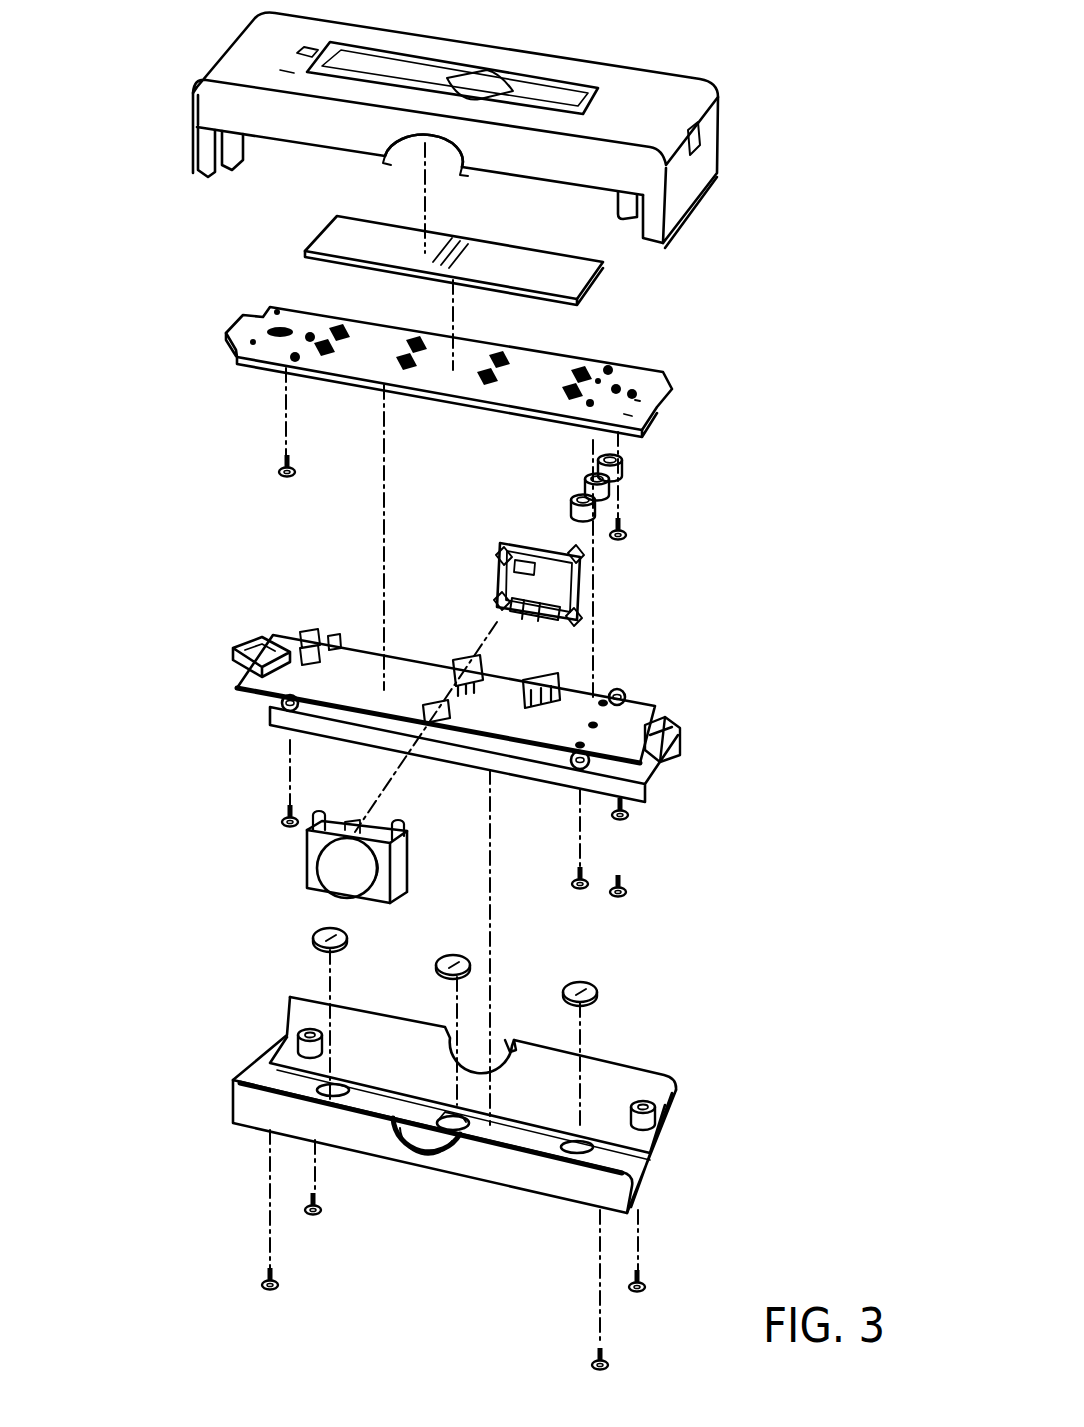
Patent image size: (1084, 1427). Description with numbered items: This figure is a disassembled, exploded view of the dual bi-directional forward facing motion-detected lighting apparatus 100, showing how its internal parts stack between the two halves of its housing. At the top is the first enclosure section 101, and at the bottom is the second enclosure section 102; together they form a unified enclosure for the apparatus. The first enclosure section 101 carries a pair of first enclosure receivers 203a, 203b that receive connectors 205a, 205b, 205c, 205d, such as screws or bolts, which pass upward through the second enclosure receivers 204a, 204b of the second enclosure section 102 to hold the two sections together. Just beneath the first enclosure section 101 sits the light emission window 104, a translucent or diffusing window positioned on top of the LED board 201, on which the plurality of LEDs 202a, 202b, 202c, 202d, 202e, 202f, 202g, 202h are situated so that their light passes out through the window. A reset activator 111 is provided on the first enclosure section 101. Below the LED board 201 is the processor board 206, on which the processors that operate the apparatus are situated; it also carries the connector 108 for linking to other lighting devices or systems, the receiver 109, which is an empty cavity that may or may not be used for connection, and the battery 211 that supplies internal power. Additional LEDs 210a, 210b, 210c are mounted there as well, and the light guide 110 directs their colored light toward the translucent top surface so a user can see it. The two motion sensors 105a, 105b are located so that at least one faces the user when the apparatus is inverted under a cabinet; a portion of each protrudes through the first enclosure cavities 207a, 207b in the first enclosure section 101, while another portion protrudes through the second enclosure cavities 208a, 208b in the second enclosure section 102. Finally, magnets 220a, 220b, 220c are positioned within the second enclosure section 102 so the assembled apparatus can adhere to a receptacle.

The dual bi-directional forward facing motion-detected lighting apparatus 100 is at (845, 126).
The first enclosure section 101 is at (172, 89).
The second enclosure section 102 is at (230, 1061).
The light emission window 104 is at (297, 235).
The motion sensor 105a is at (560, 547).
The motion sensor 105b is at (323, 867).
The connector 108 is at (680, 745).
The receiver 109 is at (240, 645).
The light guide 110 is at (580, 490).
The reset activator 111 is at (287, 72).
The LED board 201 is at (215, 320).
The LED 202a is at (340, 333).
The LED 202b is at (320, 350).
The LED 202c is at (417, 345).
The LED 202d is at (405, 363).
The LED 202e is at (500, 360).
The LED 202f is at (488, 378).
The LED 202g is at (582, 375).
The LED 202h is at (573, 395).
The first enclosure receiver 203a is at (623, 213).
The first enclosure receiver 203b is at (233, 137).
The second enclosure receiver 204a is at (650, 1104).
The second enclosure receiver 204b is at (292, 1035).
The connector 205a is at (320, 1200).
The connector 205b is at (637, 1268).
The connector 205c is at (273, 1270).
The connector 205d is at (597, 1353).
The processor board 206 is at (230, 616).
The first enclosure cavity 207a is at (457, 92).
The first enclosure cavity 207b is at (458, 175).
The second enclosure cavity 208a is at (498, 1053).
The second enclosure cavity 208b is at (433, 1167).
The additional LED 210a is at (603, 702).
The additional LED 210b is at (593, 725).
The additional LED 210c is at (580, 745).
The battery 211 is at (267, 713).
The magnet 220a is at (347, 935).
The magnet 220b is at (470, 962).
The magnet 220c is at (597, 992).